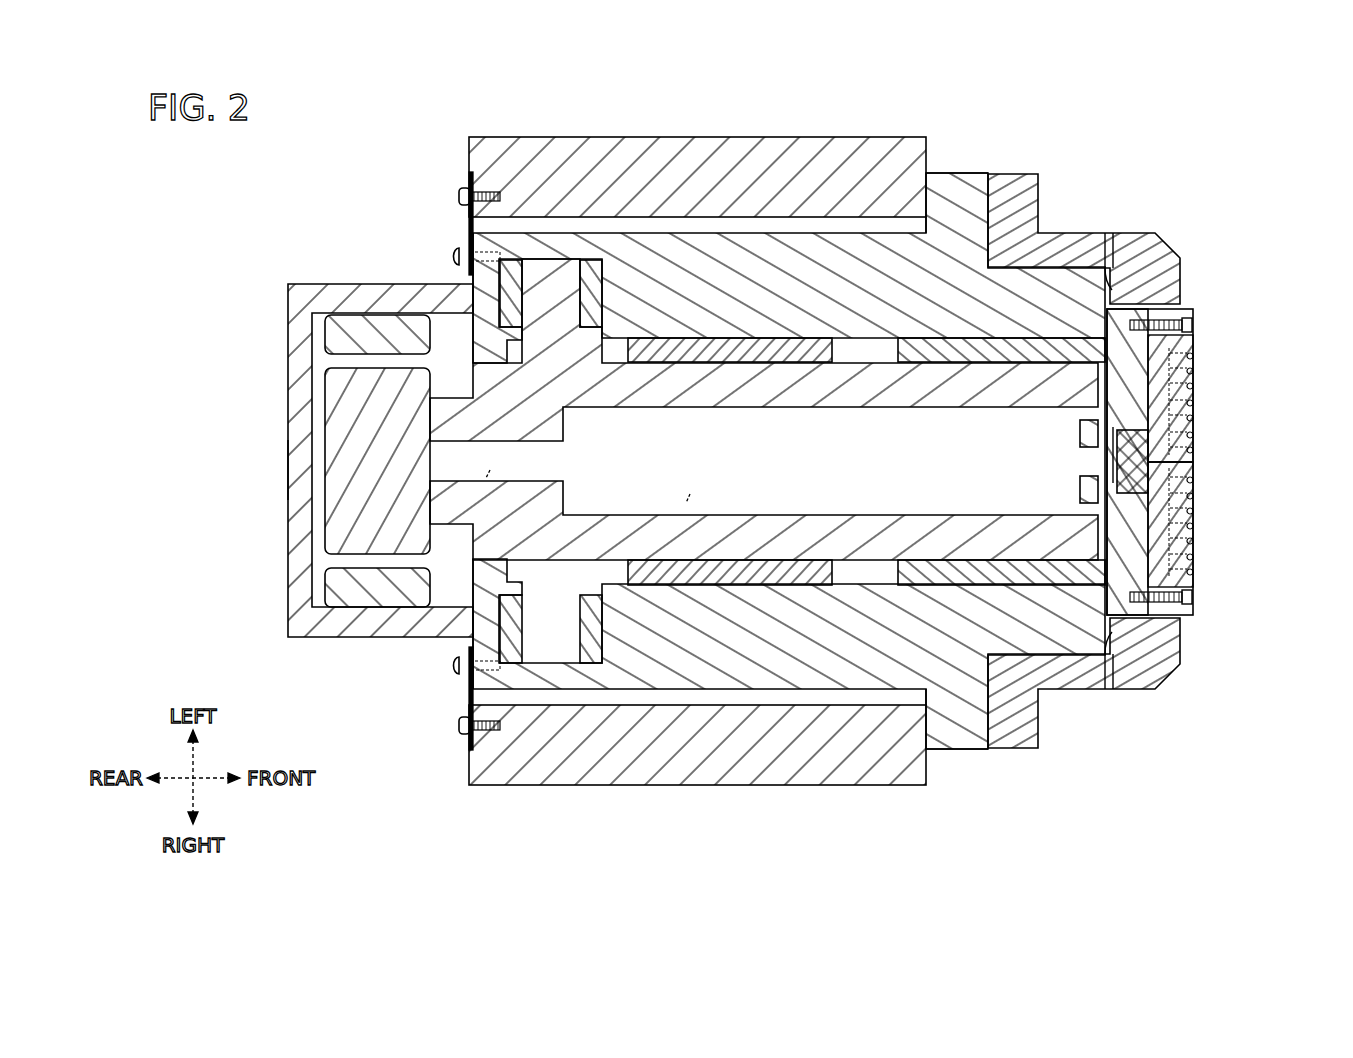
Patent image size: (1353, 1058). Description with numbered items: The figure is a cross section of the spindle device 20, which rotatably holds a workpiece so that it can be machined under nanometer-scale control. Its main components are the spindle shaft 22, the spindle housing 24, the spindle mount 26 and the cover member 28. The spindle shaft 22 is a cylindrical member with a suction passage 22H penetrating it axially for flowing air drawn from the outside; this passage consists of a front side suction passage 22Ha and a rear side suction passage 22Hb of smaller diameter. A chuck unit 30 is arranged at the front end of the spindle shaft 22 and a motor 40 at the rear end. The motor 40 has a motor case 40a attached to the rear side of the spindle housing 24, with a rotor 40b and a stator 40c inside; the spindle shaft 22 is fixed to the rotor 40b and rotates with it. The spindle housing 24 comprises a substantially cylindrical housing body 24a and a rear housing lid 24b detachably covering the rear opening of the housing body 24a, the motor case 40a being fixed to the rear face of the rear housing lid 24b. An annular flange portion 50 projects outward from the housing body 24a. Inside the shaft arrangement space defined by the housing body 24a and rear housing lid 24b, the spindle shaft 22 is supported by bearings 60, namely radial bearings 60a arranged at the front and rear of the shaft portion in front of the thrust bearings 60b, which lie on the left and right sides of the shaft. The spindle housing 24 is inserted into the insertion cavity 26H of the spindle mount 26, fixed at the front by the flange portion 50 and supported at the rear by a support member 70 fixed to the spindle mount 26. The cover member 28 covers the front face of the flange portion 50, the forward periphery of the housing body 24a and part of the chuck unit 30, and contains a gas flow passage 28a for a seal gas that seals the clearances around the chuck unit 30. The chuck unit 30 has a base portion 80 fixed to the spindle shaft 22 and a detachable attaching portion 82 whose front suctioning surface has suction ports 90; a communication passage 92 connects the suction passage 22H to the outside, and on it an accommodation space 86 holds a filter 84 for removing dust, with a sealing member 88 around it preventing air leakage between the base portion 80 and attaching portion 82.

The spindle device 20 is at (1209, 120).
The spindle shaft 22 is at (858, 398).
The suction passage 22H is at (500, 824).
The front side suction passage 22Ha is at (692, 490).
The rear side suction passage 22Hb is at (489, 466).
The spindle housing 24 is at (747, 480).
The housing body 24a is at (815, 280).
The rear housing lid 24b is at (487, 246).
The spindle mount 26 is at (741, 152).
The insertion cavity 26H is at (500, 225).
The cover member 28 is at (1068, 256).
The gas flow passage 28a is at (1108, 265).
The chuck unit 30 is at (1208, 306).
The motor 40 is at (256, 379).
The motor case 40a is at (350, 409).
The rotor 40b is at (302, 470).
The stator 40c is at (352, 331).
The flange portion 50 is at (960, 188).
The bearings 60 is at (802, 461).
The radial bearings 60a is at (740, 350).
The thrust bearings 60b is at (518, 300).
The support member 70 is at (468, 182).
The base portion 80 is at (1127, 366).
The attaching portion 82 is at (1186, 505).
The filter 84 is at (1132, 456).
The accommodation space 86 is at (1152, 465).
The sealing member 88 is at (1192, 327).
The suction ports 90 is at (1192, 540).
The communication passage 92 is at (1170, 377).